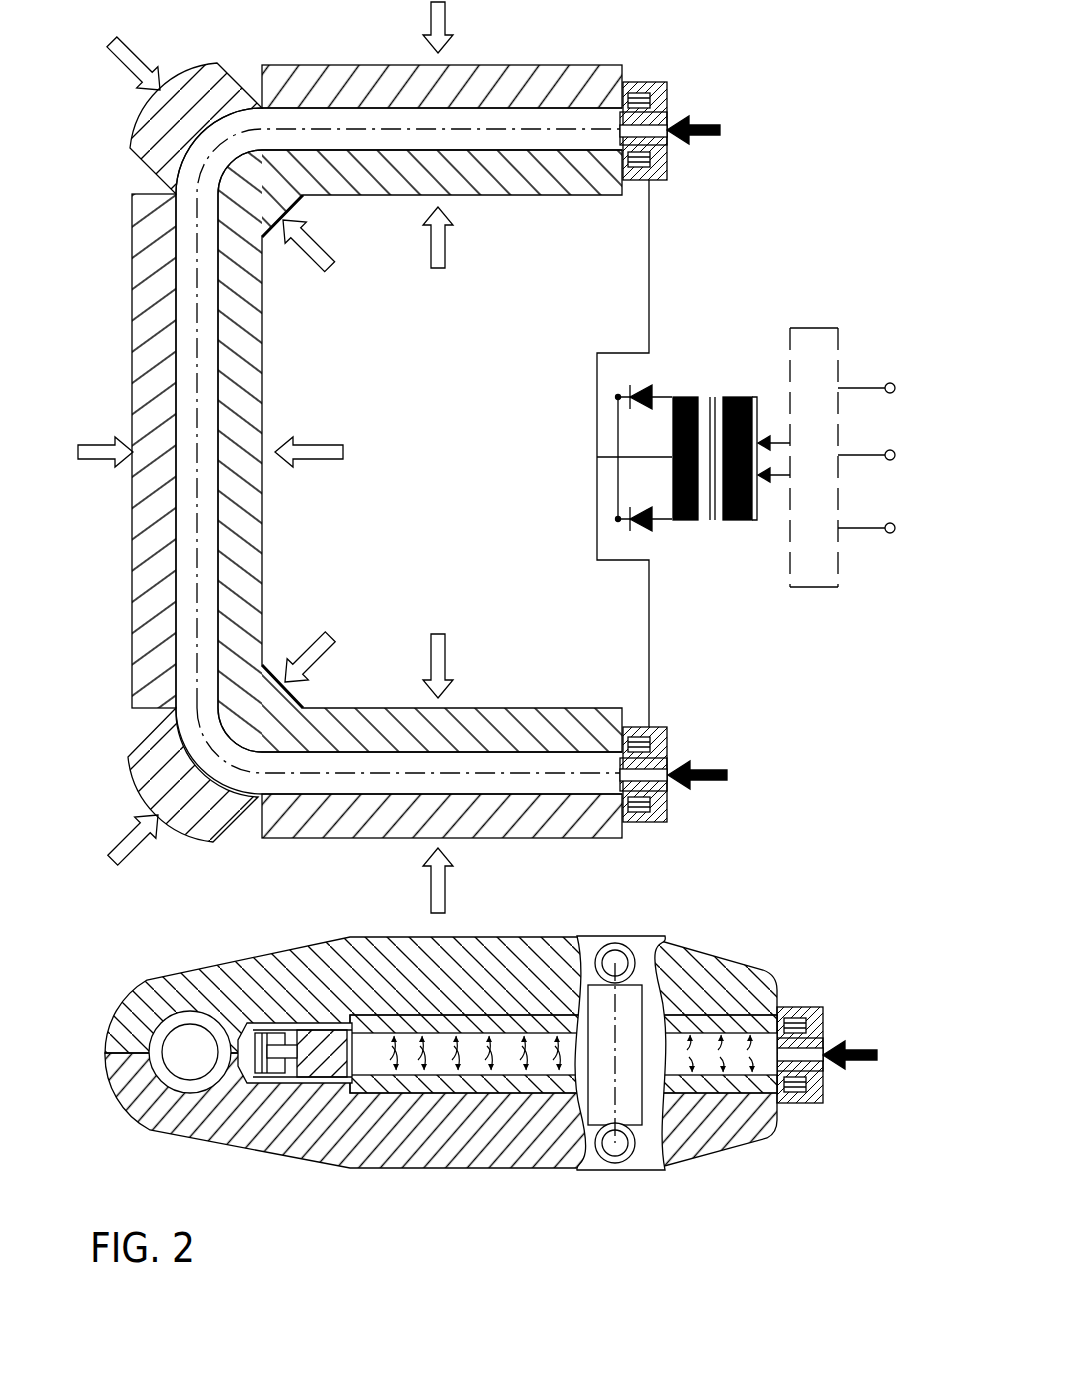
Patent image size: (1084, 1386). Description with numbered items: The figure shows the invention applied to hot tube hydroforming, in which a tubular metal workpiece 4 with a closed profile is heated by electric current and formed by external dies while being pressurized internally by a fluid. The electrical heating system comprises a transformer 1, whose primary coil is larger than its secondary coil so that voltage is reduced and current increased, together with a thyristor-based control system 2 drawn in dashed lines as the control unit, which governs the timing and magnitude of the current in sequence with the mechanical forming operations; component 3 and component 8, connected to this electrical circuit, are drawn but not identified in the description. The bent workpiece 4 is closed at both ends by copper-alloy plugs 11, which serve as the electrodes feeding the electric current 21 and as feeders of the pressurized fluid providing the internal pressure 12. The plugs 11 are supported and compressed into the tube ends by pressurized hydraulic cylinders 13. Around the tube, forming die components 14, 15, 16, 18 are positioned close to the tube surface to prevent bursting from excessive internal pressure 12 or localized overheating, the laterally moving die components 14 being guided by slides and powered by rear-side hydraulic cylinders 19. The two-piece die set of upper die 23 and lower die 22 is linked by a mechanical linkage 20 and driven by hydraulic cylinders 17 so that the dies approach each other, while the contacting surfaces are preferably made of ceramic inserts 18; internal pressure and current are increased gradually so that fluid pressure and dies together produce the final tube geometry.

The transformer 1 is at (703, 395).
The control system 2 is at (817, 585).
The electrical line 3 is at (650, 270).
The workpiece 4 is at (593, 110).
The diode 8 is at (640, 536).
The plug 11 is at (658, 812).
The internal pressure 12 is at (425, 1072).
The hydraulic cylinder 13 is at (652, 743).
The die component 14 is at (525, 83).
The forming die component 15 is at (295, 205).
The forming die component 16 is at (223, 67).
The hydraulic cylinder 17 is at (598, 1113).
The ceramic insert 18 is at (497, 1087).
The rear-side hydraulic cylinder 19 is at (272, 1077).
The mechanical linkage 20 is at (190, 1050).
The electric current 21 is at (667, 777).
The lower die 22 is at (743, 1127).
The upper die 23 is at (707, 972).